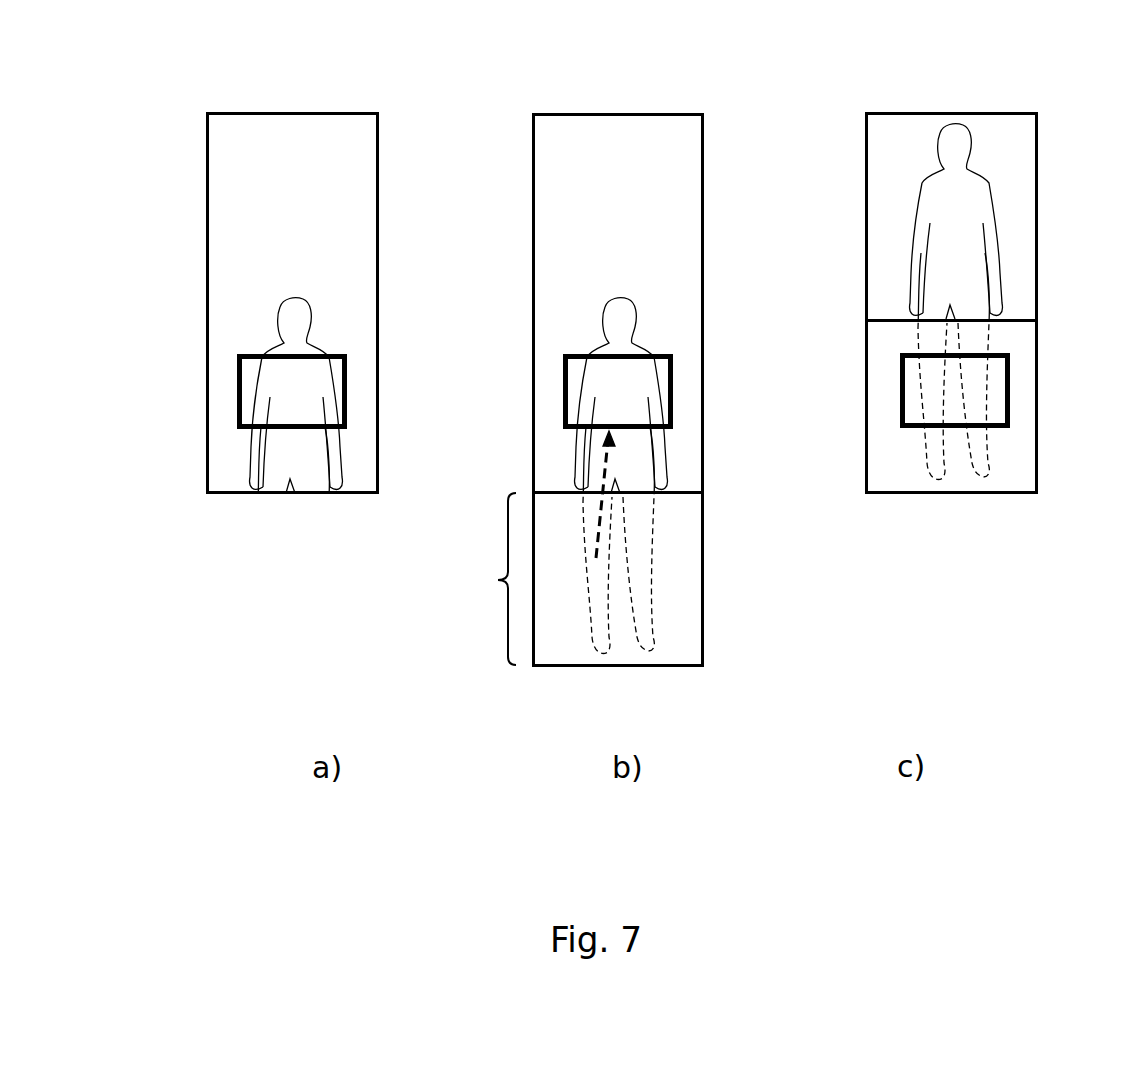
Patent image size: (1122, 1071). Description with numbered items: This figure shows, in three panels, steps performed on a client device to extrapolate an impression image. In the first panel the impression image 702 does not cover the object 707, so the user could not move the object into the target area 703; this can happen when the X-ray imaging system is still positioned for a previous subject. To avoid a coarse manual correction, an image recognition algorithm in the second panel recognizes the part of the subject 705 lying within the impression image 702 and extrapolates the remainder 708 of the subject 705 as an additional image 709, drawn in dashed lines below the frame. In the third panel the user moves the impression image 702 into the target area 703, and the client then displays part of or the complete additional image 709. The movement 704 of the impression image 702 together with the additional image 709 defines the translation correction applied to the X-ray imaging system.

The impression image 702 is at (294, 113).
The target area 703 is at (239, 368).
The movement 704 is at (605, 457).
The subject 705 is at (312, 318).
The object 707 is at (930, 398).
The remainder of the subject 708 is at (645, 547).
The additional image 709 is at (497, 580).